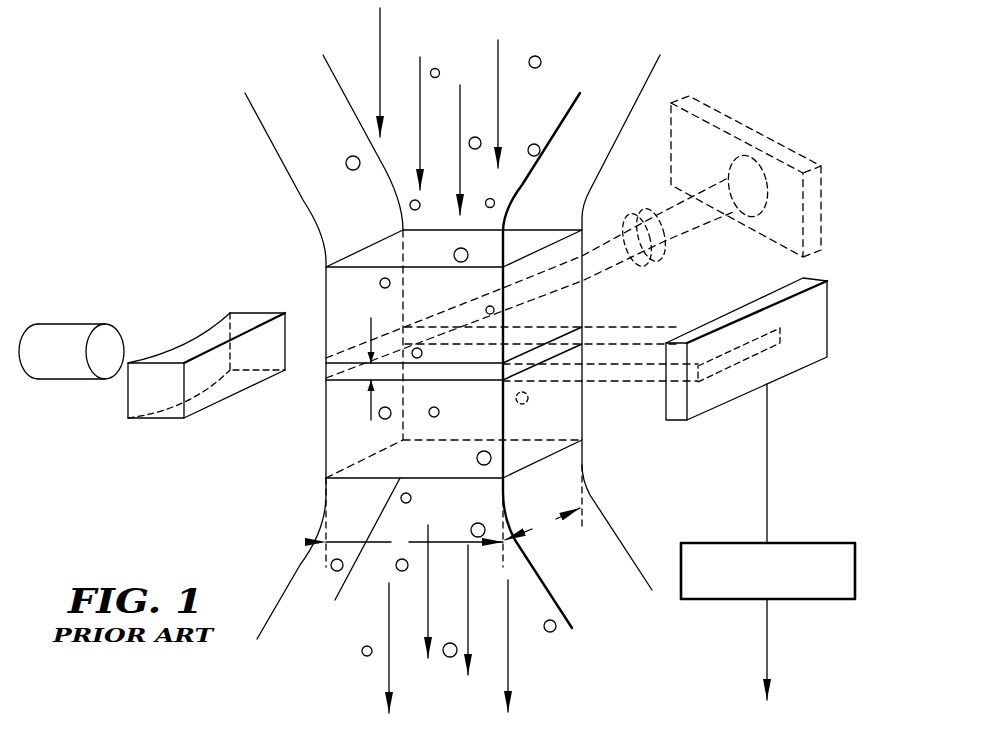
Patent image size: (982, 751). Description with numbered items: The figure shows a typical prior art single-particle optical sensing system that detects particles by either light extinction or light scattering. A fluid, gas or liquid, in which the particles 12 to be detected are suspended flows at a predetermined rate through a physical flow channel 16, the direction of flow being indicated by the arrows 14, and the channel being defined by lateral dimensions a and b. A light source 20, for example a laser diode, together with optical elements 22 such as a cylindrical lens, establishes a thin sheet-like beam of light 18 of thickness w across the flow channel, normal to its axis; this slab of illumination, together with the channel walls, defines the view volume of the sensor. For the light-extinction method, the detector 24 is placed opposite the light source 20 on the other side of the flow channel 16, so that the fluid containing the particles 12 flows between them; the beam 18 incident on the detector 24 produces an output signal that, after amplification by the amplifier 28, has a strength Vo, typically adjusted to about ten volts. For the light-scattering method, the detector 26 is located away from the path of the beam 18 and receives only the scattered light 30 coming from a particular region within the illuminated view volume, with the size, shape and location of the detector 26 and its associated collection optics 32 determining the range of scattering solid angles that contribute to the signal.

The particles 12 is at (480, 138).
The arrows 14 is at (420, 84).
The flow channel 16 is at (326, 293).
The sheet-like beam of light 18 is at (453, 375).
The light source 20 is at (68, 330).
The optical elements 22 is at (176, 420).
The light-extinction detector 24 is at (792, 373).
The light-scattering detector 26 is at (760, 132).
The amplifier 28 is at (830, 543).
The scattered light 30 is at (601, 247).
The collection optics 32 is at (664, 254).